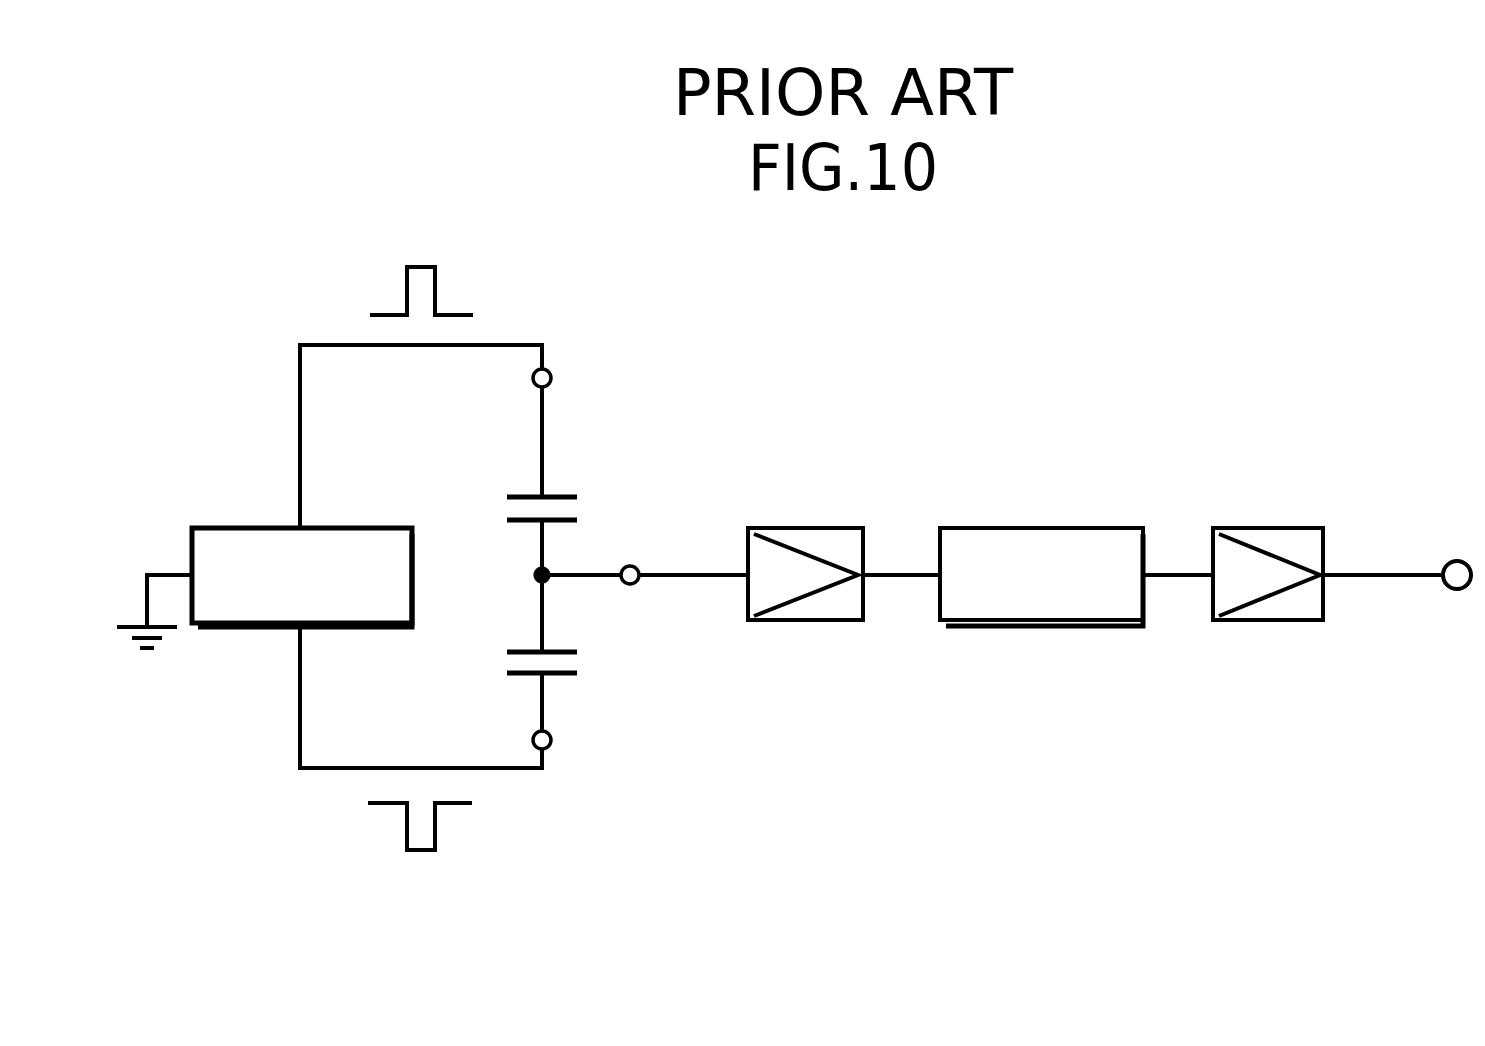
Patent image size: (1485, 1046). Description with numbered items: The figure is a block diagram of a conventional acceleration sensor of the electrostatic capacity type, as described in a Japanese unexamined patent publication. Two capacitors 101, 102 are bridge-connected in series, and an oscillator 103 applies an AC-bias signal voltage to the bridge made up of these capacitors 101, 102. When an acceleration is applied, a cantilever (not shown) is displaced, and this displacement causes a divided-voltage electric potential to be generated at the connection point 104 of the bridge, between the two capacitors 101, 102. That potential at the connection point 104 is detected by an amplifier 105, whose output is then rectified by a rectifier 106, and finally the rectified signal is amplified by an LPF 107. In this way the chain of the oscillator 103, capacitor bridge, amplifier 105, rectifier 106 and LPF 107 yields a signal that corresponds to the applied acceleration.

The capacitor 101 is at (557, 492).
The capacitor 102 is at (557, 678).
The oscillator 103 is at (240, 526).
The connection point 104 is at (549, 570).
The amplifier 105 is at (816, 527).
The rectifier 106 is at (1016, 527).
The LPF 107 is at (1280, 527).